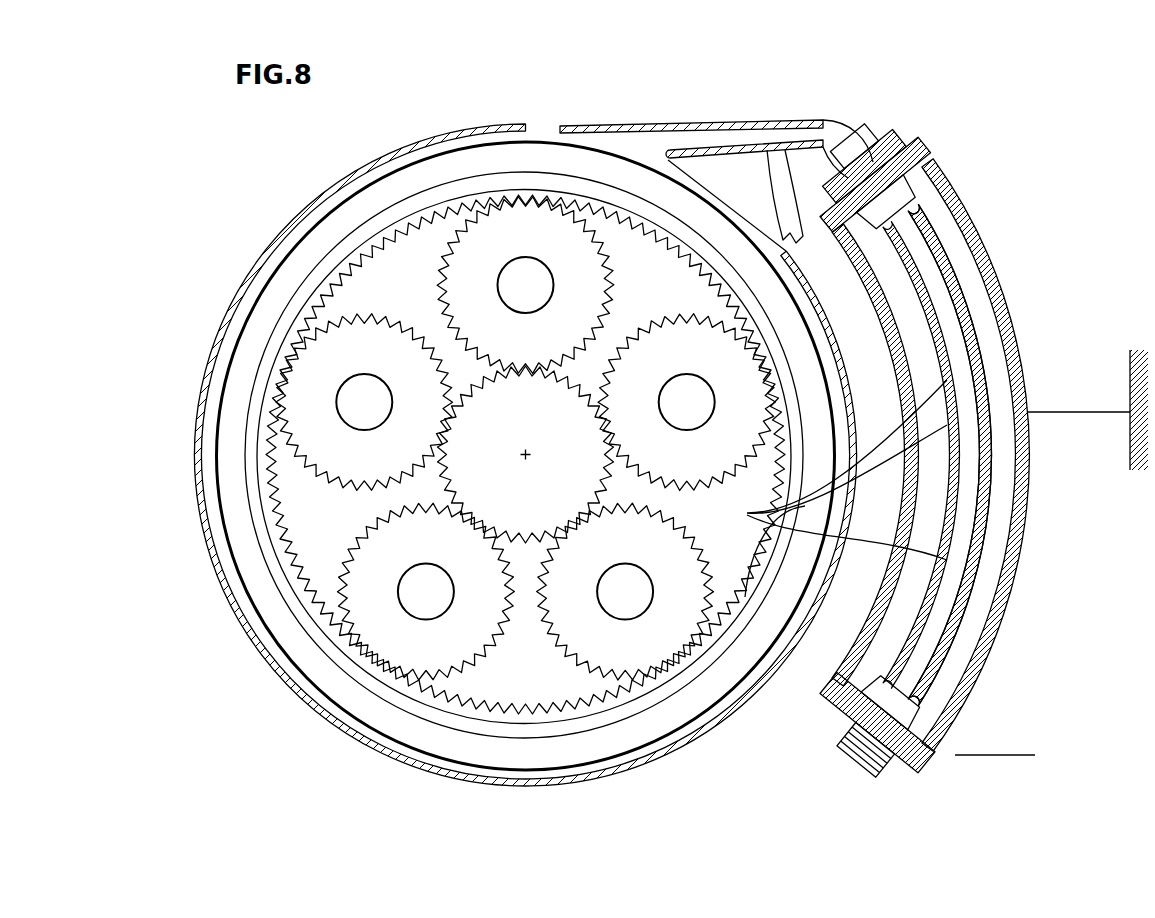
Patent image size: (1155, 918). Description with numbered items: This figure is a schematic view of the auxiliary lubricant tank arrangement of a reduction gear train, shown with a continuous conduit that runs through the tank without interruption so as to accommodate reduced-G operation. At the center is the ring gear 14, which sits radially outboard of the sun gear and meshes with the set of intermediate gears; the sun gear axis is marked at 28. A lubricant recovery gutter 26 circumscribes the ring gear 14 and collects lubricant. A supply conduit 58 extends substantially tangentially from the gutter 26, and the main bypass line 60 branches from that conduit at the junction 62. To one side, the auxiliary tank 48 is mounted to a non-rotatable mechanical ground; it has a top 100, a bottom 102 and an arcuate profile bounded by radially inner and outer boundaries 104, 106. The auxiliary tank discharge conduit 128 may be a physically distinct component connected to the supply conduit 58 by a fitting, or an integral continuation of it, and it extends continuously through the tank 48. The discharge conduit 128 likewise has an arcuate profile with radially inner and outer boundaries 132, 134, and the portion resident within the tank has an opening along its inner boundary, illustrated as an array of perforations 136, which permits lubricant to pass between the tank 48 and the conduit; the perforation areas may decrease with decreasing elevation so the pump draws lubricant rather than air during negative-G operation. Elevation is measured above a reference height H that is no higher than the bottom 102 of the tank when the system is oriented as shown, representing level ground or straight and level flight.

The ring gear 14 is at (412, 232).
The lubricant recovery gutter 26 is at (425, 153).
The sun gear axis 28 is at (531, 461).
The auxiliary tank 48 is at (1017, 347).
The supply conduit 58 is at (710, 137).
The main bypass line 60 is at (765, 178).
The junction 62 is at (788, 148).
The top 100 is at (903, 147).
The bottom 102 is at (900, 768).
The radially inner boundary 104 is at (900, 372).
The radially outer boundary 106 is at (1027, 385).
The auxiliary tank discharge conduit 128 is at (962, 548).
The radially inner boundary 132 is at (932, 516).
The radially outer boundary 134 is at (972, 462).
The perforations 136 is at (826, 488).
The reference height H is at (1025, 757).